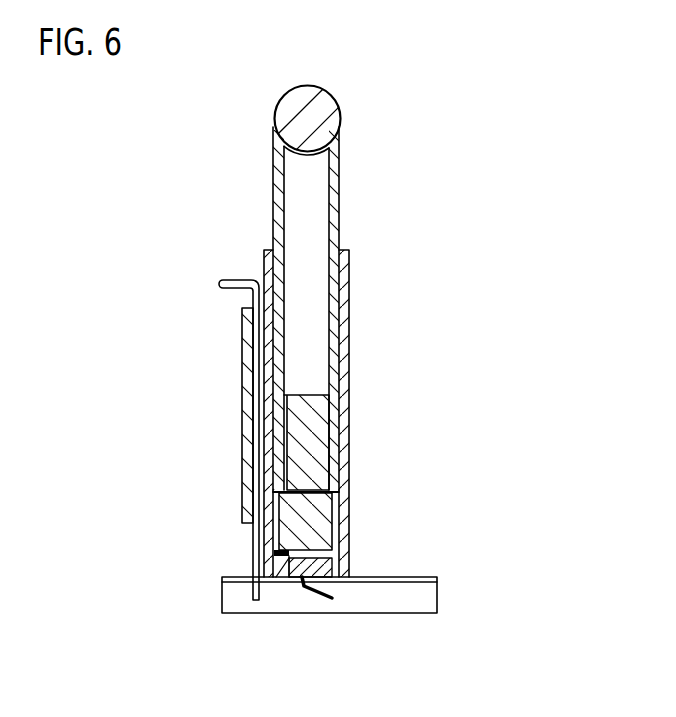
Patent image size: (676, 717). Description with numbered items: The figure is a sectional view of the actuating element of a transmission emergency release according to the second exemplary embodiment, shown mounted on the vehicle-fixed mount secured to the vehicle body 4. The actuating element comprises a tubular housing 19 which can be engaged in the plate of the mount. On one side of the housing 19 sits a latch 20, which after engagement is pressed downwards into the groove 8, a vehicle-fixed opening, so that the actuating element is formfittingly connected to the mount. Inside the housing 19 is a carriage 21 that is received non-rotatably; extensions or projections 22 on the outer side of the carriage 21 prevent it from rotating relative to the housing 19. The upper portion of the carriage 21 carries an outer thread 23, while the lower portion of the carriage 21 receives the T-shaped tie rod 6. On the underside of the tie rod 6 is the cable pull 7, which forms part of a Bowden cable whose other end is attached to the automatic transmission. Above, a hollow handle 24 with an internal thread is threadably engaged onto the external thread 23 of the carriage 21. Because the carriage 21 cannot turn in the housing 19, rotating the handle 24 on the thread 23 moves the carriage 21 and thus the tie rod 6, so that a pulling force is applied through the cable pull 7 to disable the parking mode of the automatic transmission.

The vehicle body 4 is at (433, 577).
The tie rod 6 is at (293, 583).
The cable pull 7 is at (323, 600).
The groove 8 is at (257, 601).
The tubular housing 19 is at (350, 308).
The latch 20 is at (238, 280).
The carriage 21 is at (318, 523).
The projections 22 is at (339, 492).
The outer thread 23 is at (333, 431).
The hollow handle 24 is at (333, 95).